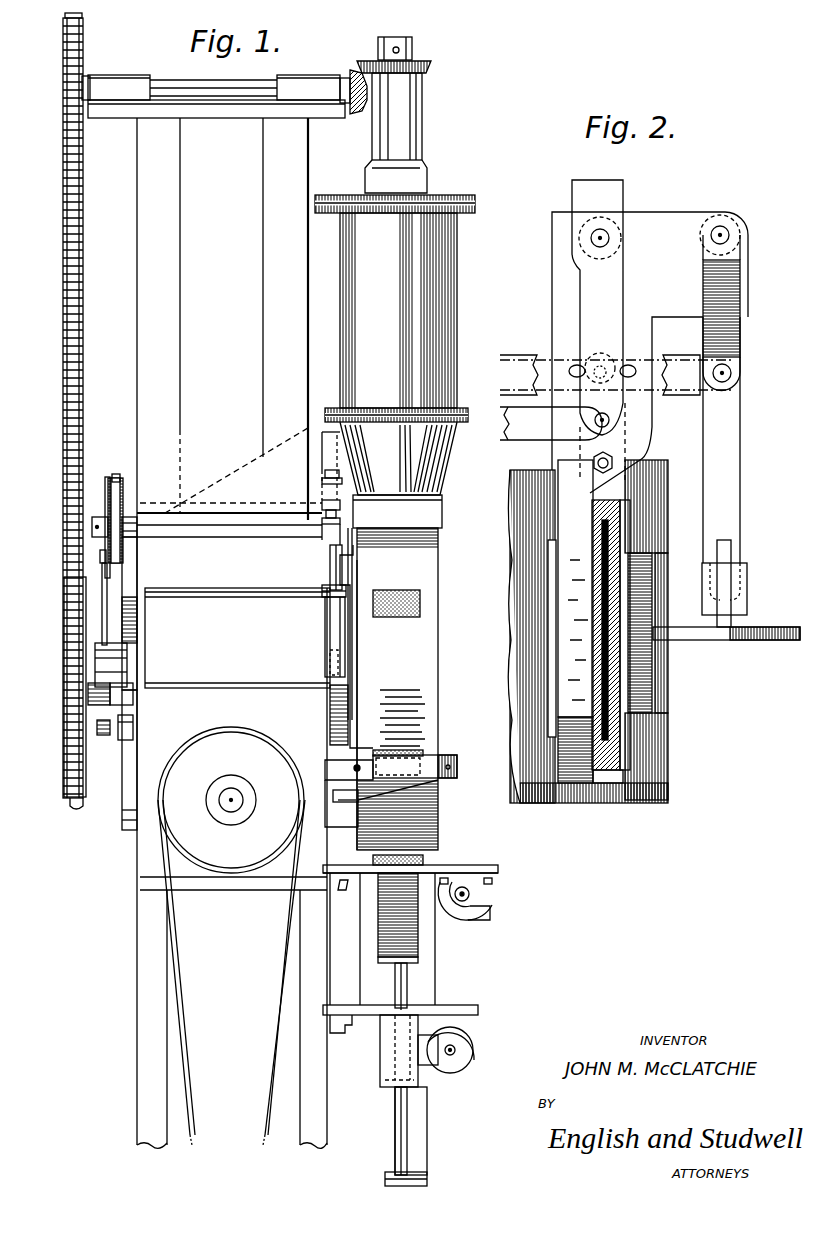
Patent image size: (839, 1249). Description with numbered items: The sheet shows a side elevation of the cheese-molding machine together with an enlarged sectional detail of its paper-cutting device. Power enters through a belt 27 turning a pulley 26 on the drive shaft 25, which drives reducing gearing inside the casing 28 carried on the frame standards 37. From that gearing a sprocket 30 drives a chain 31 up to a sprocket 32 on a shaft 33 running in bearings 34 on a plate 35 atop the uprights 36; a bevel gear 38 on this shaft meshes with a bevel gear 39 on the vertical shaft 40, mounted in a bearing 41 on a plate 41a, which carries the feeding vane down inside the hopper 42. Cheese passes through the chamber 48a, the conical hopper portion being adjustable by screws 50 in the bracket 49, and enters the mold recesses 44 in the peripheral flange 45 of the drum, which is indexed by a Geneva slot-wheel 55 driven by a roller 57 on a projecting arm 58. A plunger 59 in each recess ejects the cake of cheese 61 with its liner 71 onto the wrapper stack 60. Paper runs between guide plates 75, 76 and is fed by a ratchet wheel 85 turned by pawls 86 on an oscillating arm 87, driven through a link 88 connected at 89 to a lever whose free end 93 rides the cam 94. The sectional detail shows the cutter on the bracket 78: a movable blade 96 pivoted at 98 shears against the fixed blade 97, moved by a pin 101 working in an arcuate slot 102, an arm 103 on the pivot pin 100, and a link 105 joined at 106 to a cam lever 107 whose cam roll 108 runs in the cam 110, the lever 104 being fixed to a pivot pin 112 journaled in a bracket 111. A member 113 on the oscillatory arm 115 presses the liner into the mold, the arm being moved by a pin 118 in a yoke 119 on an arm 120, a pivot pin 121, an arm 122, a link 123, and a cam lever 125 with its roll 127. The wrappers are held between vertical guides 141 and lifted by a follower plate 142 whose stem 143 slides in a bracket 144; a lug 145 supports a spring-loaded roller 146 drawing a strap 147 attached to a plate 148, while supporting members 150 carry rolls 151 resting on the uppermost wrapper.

In FIG. 1, the drive shaft 25 is at (231, 806).
In FIG. 1, the pulley 26 is at (252, 740).
In FIG. 1, the belt 27 is at (178, 995).
In FIG. 1, the casing 28 is at (143, 845).
In FIG. 1, the sprocket 30 is at (66, 665).
In FIG. 1, the chain 31 is at (84, 352).
In FIG. 1, the sprocket 32 is at (84, 47).
In FIG. 1, the shaft 33 is at (172, 95).
In FIG. 1, the bearings 34 is at (130, 84).
In FIG. 1, the plate 35 is at (226, 118).
In FIG. 1, the uprights 36 is at (282, 262).
In FIG. 1, the frame standards 37 is at (142, 972).
In FIG. 1, the bevel gear 38 is at (352, 72).
In FIG. 1, the bevel gear 39 is at (431, 66).
In FIG. 1, the vertical shaft 40 is at (412, 47).
In FIG. 1, the bearing 41 is at (423, 134).
In FIG. 1, the plate 41a is at (462, 196).
In FIG. 1, the hopper 42 is at (396, 317).
In FIG. 1, the mold recesses 44 is at (421, 606).
In FIG. 2, the mold recesses 44 is at (548, 548).
In FIG. 1, the peripheral flange 45 is at (428, 580).
In FIG. 1, the chamber 48a is at (432, 519).
In FIG. 1, the bracket 49 is at (348, 452).
In FIG. 1, the screws 50 is at (322, 545).
In FIG. 1, the slot-wheel 55 is at (128, 760).
In FIG. 1, the roller 57 is at (133, 727).
In FIG. 1, the projecting arm 58 is at (130, 702).
In FIG. 1, the plunger 59 is at (423, 856).
In FIG. 1, the wrapper stack 60 is at (408, 940).
In FIG. 1, the cake of cheese 61 is at (425, 866).
In FIG. 1, the paper sheet 71 is at (425, 862).
In FIG. 2, the guide plate 75 is at (618, 755).
In FIG. 2, the guide plate 76 is at (612, 783).
In FIG. 2, the bracket 78 is at (690, 212).
In FIG. 1, the ratchet wheel 85 is at (124, 492).
In FIG. 1, the pawls 86 is at (116, 476).
In FIG. 1, the oscillating arm 87 is at (107, 478).
In FIG. 1, the link 88 is at (107, 590).
In FIG. 1, the connection 89 is at (100, 557).
In FIG. 1, the free end of lever 93 is at (103, 735).
In FIG. 1, the cam 94 is at (105, 686).
In FIG. 2, the movable blade 96 is at (628, 730).
In FIG. 2, the fixed blade 97 is at (570, 783).
In FIG. 2, the pivot 98 is at (593, 462).
In FIG. 2, the pivot pin 100 is at (609, 238).
In FIG. 2, the pin 101 is at (601, 348).
In FIG. 2, the transverse arcuate slot 102 is at (630, 366).
In FIG. 2, the arm 103 is at (610, 280).
In FIG. 2, the lever 104 is at (609, 424).
In FIG. 1, the link 105 is at (355, 558).
In FIG. 2, the link 105 is at (551, 423).
In FIG. 1, the connection 106 is at (352, 556).
In FIG. 1, the cam lever 107 is at (355, 592).
In FIG. 1, the cam roll 108 is at (342, 700).
In FIG. 1, the cam 110 is at (330, 632).
In FIG. 1, the bracket 111 is at (353, 793).
In FIG. 1, the pivot pin 112 is at (457, 767).
In FIG. 2, the member 113 is at (648, 664).
In FIG. 2, the oscillatory arm 115 is at (772, 641).
In FIG. 2, the projecting pin 118 is at (732, 551).
In FIG. 2, the yoke 119 is at (748, 594).
In FIG. 2, the arm 120 is at (733, 512).
In FIG. 2, the pivot pin 121 is at (726, 232).
In FIG. 2, the arm 122 is at (740, 345).
In FIG. 1, the link 123 is at (330, 573).
In FIG. 2, the link 123 is at (676, 382).
In FIG. 1, the cam lever 125 is at (325, 594).
In FIG. 1, the roll 127 is at (330, 659).
In FIG. 1, the vertical guides 141 is at (410, 925).
In FIG. 1, the follower plate 142 is at (415, 962).
In FIG. 1, the stem 143 is at (406, 990).
In FIG. 1, the bracket 144 is at (380, 1040).
In FIG. 1, the lug 145 is at (455, 1050).
In FIG. 1, the roller 146 is at (462, 1036).
In FIG. 1, the strap 147 is at (427, 1138).
In FIG. 1, the plate 148 is at (386, 1175).
In FIG. 1, the supporting members 150 is at (372, 860).
In FIG. 1, the rolls 151 is at (350, 878).